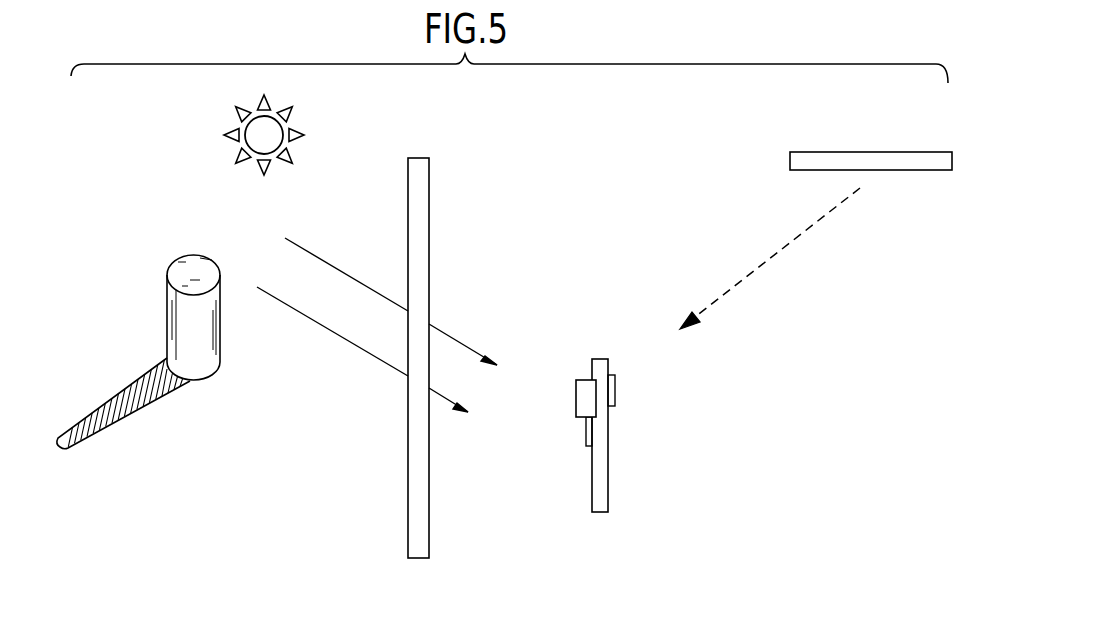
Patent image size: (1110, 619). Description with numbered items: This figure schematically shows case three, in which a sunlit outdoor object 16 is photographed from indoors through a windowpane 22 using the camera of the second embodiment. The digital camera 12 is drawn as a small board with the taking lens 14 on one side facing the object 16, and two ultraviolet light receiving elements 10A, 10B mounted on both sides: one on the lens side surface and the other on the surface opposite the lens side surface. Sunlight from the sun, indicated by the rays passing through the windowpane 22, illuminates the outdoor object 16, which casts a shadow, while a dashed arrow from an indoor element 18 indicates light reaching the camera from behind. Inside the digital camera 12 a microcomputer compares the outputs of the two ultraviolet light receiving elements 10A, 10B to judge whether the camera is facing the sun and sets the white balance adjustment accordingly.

The ultraviolet light receiving element 10A is at (585, 433).
The ultraviolet light receiving element 10B is at (617, 390).
The digital camera 12 is at (612, 478).
The taking lens 14 is at (587, 383).
The outdoor object 16 is at (170, 318).
The reflector 18 is at (909, 164).
The windowpane 22 is at (412, 500).